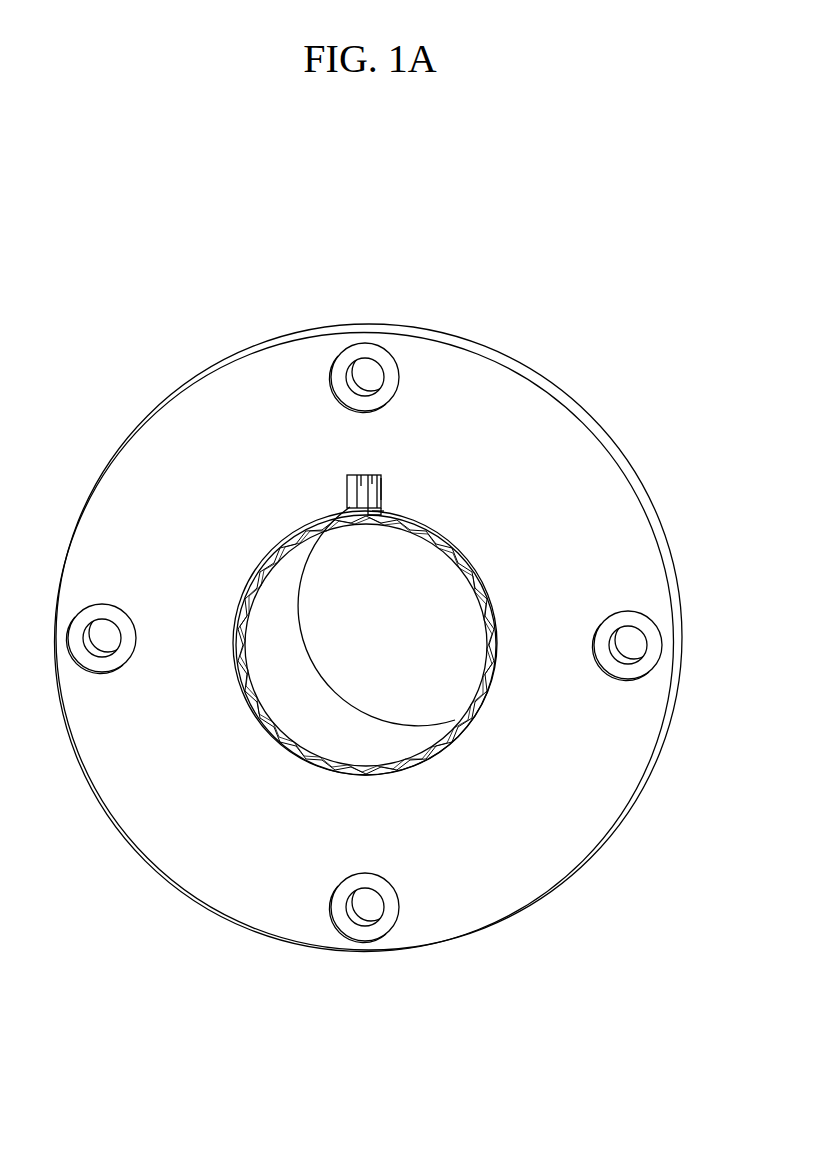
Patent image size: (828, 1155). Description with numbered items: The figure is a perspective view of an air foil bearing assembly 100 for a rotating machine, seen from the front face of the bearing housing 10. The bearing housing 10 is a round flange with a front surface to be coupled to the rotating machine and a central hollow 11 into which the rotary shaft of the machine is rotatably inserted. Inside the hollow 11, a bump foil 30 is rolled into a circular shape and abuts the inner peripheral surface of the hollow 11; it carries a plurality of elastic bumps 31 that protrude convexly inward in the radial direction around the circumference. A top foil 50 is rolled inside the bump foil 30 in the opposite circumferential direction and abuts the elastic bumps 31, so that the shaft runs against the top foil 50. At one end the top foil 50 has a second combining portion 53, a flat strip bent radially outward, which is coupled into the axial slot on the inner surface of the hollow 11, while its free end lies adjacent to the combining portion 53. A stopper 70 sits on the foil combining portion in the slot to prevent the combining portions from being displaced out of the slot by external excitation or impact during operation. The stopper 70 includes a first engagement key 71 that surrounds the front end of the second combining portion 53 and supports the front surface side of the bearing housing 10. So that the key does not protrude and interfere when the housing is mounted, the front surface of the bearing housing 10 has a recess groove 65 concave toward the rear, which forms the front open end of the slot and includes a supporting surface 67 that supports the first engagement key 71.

The air foil bearing assembly 100 is at (314, 245).
The bearing housing 10 is at (599, 416).
The hollow 11 is at (278, 737).
The bump foil 30 is at (329, 768).
The elastic bumps 31 is at (367, 767).
The top foil 50 is at (256, 709).
The second combining portion 53 is at (381, 510).
The recess groove 65 is at (341, 492).
The supporting surface 67 is at (361, 485).
The stopper 70 is at (381, 487).
The first engagement key 71 is at (372, 482).